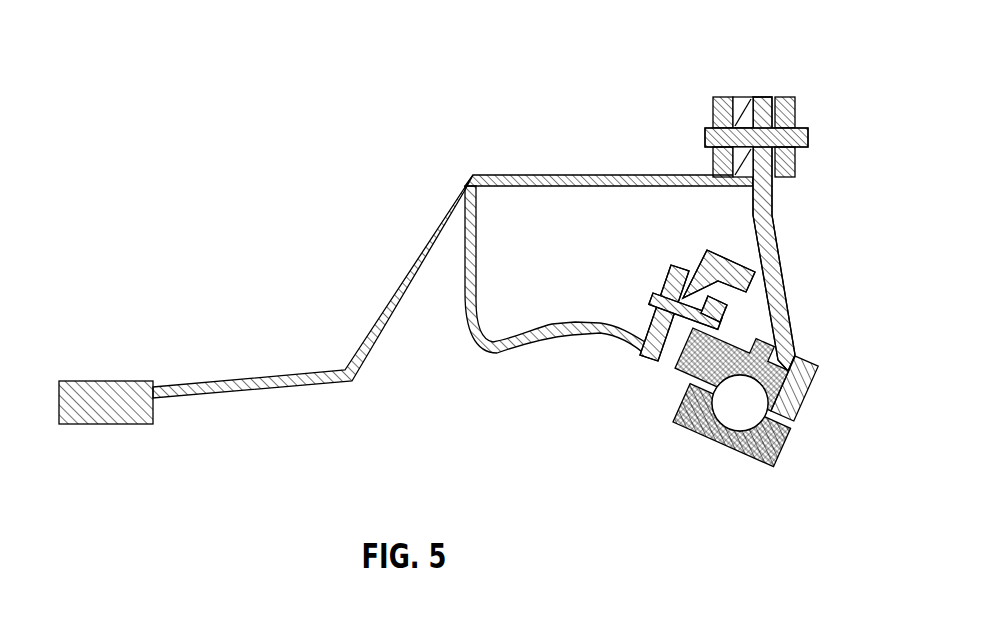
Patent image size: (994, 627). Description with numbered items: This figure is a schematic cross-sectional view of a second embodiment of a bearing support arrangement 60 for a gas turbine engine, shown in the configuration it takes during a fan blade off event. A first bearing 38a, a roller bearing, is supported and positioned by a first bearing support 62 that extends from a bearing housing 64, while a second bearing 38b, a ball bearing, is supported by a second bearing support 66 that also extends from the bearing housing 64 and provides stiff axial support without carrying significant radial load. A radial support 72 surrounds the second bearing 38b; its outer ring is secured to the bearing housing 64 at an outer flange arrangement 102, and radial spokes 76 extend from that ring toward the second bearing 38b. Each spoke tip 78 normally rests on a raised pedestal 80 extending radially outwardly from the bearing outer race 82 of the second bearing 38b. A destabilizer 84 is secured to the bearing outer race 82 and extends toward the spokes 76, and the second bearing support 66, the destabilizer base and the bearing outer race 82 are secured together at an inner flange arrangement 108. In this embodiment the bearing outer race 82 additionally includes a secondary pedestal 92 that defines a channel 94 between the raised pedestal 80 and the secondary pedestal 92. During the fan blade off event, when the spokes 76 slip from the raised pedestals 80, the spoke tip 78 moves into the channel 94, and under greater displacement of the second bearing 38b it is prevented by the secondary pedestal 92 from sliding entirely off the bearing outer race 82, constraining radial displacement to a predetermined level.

The bearing support arrangement 60 is at (148, 66).
The outer flange arrangement 102 is at (791, 56).
The inner flange arrangement 108 is at (657, 386).
The first bearing 38a is at (108, 405).
The second bearing 38b is at (707, 435).
The first bearing support 62 is at (413, 272).
The bearing housing 64 is at (573, 175).
The second bearing support 66 is at (493, 350).
The radial support 72 is at (765, 122).
The radial spokes 76 is at (777, 217).
The spoke tip 78 is at (795, 342).
The raised pedestal 80 is at (748, 340).
The bearing outer race 82 is at (800, 405).
The destabilizer 84 is at (700, 270).
The secondary pedestal 92 is at (817, 377).
The channel 94 is at (787, 337).